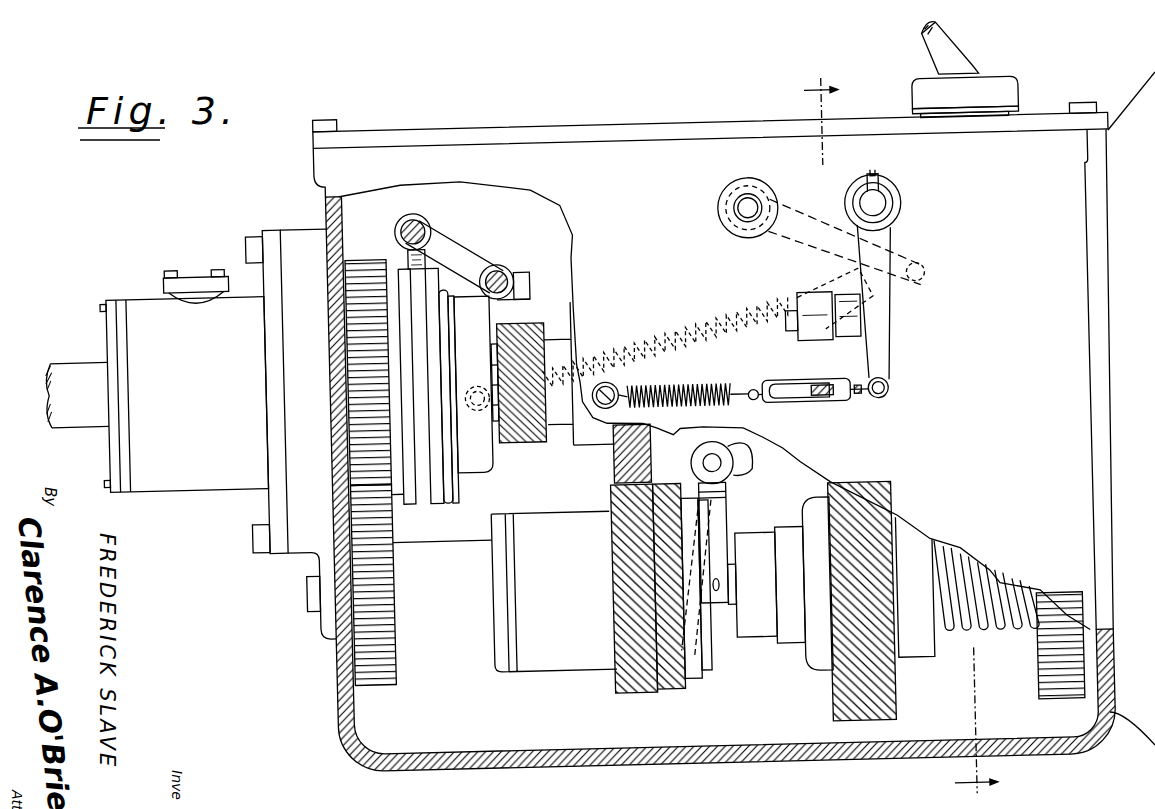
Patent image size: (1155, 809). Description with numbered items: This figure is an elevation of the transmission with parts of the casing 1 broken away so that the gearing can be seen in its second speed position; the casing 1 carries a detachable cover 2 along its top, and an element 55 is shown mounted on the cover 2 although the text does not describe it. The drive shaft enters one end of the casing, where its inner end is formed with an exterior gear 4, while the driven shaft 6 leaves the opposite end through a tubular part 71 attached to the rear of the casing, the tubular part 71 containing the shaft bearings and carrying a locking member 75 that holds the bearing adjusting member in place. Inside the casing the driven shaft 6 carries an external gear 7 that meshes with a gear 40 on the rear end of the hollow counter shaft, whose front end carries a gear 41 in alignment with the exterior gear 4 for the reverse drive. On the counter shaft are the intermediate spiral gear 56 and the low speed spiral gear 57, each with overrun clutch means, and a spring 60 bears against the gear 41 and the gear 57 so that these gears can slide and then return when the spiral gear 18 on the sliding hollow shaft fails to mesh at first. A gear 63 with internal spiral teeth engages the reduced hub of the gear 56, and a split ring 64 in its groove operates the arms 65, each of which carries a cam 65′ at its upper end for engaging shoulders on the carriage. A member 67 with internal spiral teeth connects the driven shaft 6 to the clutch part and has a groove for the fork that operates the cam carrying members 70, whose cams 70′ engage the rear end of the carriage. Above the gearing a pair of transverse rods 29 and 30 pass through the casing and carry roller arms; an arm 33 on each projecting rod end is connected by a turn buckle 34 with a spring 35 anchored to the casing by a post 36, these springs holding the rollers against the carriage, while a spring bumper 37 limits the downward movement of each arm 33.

The casing 1 is at (717, 450).
The detachable cover 2 is at (630, 122).
The exterior gear 4 is at (908, 439).
The driven shaft 6 is at (70, 365).
The external gear 7 is at (365, 255).
The spiral gear 18 is at (613, 445).
The transverse rod 29 is at (888, 206).
The transverse rod 30 is at (738, 208).
The arm 33 is at (893, 348).
The turn buckle 34 is at (812, 404).
The spring 35 is at (710, 385).
The post 36 is at (610, 382).
The spring bumper 37 is at (850, 333).
The gear 40 is at (380, 665).
The gear 41 is at (1050, 695).
The toggle switch 55 is at (972, 44).
The intermediate spiral gear 56 is at (662, 614).
The low speed spiral gear 57 is at (840, 690).
The spring 60 is at (995, 620).
The gear 63 is at (660, 692).
The split ring 64 is at (690, 678).
The arm 65 is at (726, 505).
The cam 65′ is at (756, 459).
The member 67 is at (455, 470).
The cam carrying member 70 is at (455, 250).
The cam 70′ is at (530, 292).
The tubular part 71 is at (178, 470).
The locking member 75 is at (200, 265).